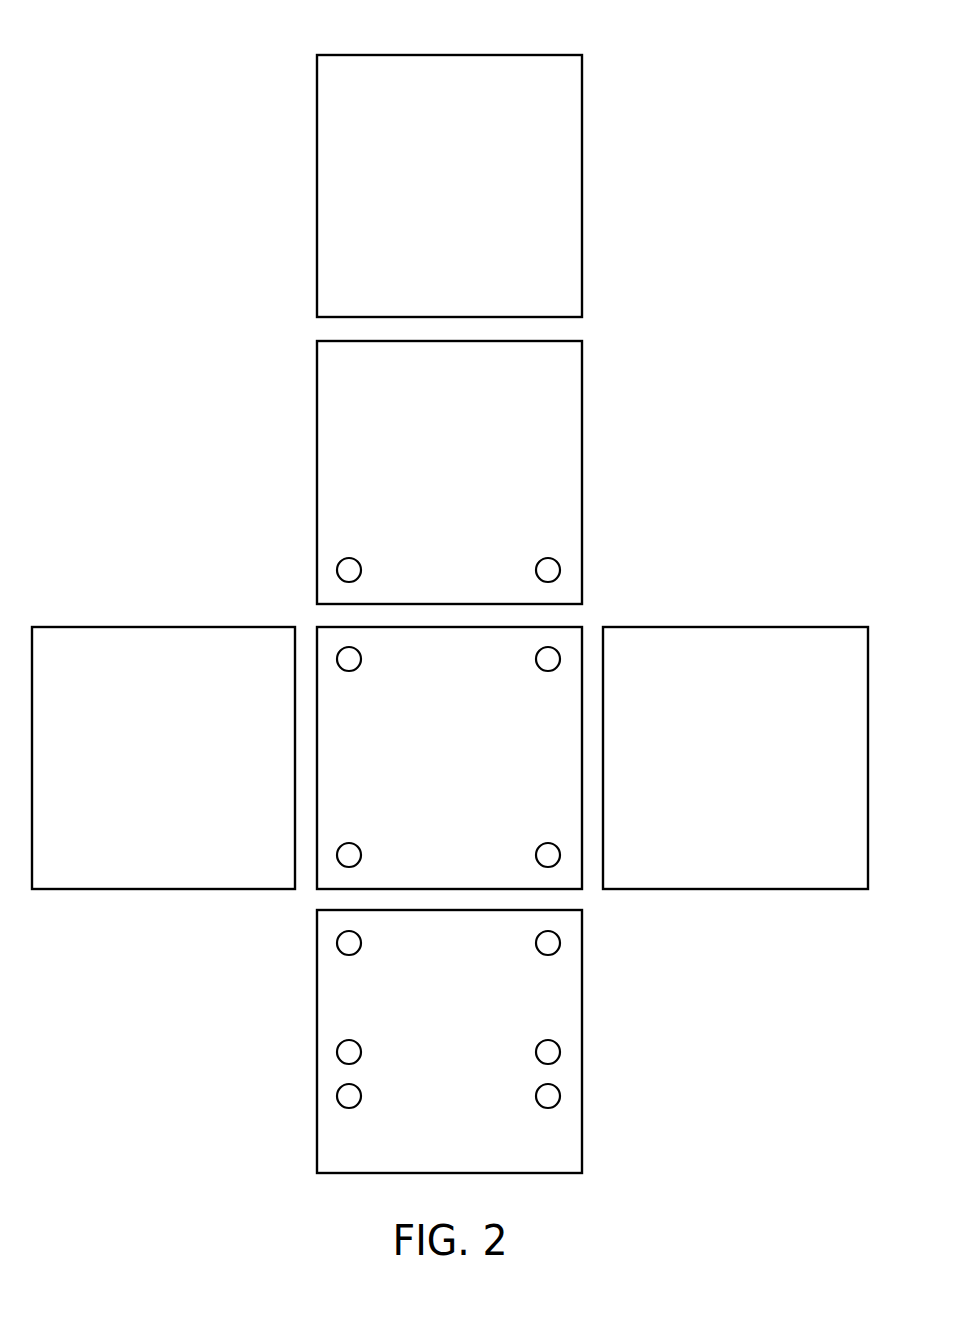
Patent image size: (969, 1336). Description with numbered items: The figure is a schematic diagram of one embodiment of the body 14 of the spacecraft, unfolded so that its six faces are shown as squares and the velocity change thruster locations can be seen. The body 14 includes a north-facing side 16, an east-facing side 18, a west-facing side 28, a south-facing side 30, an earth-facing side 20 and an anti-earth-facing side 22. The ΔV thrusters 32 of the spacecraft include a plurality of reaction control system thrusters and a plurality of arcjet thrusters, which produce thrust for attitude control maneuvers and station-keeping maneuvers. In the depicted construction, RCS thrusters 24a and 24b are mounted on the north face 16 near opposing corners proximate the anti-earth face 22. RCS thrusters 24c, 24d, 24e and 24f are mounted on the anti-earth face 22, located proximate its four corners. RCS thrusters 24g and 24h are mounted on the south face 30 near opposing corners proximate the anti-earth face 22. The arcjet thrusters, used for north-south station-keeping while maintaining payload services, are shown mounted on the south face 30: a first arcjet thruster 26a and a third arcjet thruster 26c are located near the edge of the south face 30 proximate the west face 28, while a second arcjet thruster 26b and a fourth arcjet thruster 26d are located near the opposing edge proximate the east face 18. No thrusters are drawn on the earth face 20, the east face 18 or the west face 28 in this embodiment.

The body 14 is at (697, 413).
The north-facing side 16 is at (465, 486).
The east-facing side 18 is at (722, 770).
The earth-facing side 20 is at (467, 200).
The anti-earth-facing side 22 is at (466, 770).
The RCS thruster 24a is at (358, 562).
The RCS thruster 24b is at (540, 562).
The RCS thruster 24c is at (358, 667).
The RCS thruster 24d is at (540, 667).
The RCS thruster 24e is at (358, 847).
The RCS thruster 24f is at (540, 847).
The RCS thruster 24g is at (358, 951).
The RCS thruster 24h is at (540, 951).
The first arcjet thruster 26a is at (358, 1060).
The second arcjet thruster 26b is at (540, 1060).
The third arcjet thruster 26c is at (351, 1108).
The fourth arcjet thruster 26d is at (546, 1108).
The west-facing side 28 is at (147, 770).
The south-facing side 30 is at (432, 1054).
The ΔV thrusters 32 is at (243, 579).